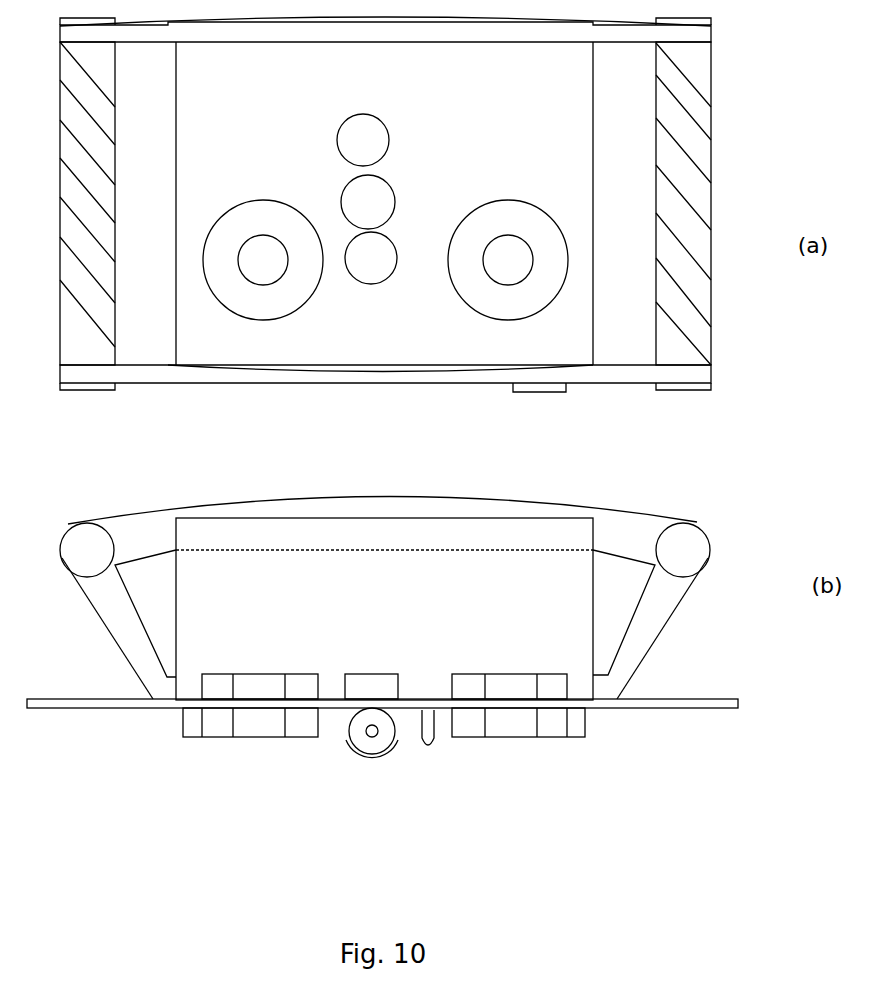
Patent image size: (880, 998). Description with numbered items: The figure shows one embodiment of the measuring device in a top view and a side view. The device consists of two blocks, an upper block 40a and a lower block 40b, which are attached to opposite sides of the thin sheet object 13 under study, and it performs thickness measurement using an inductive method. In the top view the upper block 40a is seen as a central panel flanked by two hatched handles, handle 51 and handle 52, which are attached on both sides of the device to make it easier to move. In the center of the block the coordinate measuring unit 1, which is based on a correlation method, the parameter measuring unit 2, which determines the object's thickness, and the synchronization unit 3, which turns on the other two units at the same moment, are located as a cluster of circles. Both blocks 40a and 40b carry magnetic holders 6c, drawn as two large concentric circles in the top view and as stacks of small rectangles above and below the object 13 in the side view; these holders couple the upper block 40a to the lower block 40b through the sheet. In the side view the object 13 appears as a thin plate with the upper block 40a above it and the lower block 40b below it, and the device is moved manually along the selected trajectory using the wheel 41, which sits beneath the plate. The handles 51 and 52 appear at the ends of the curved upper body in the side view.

The coordinate measuring unit 1 is at (371, 465).
The parameter measuring unit 2 is at (363, 140).
The synchronization unit 3 is at (368, 202).
The magnetic holders 6c is at (384, 484).
The object 13 is at (404, 712).
The upper block 40a is at (385, 358).
The lower block 40b is at (530, 735).
The wheel 41 is at (372, 750).
The handle 51 is at (652, 370).
The handle 52 is at (378, 370).